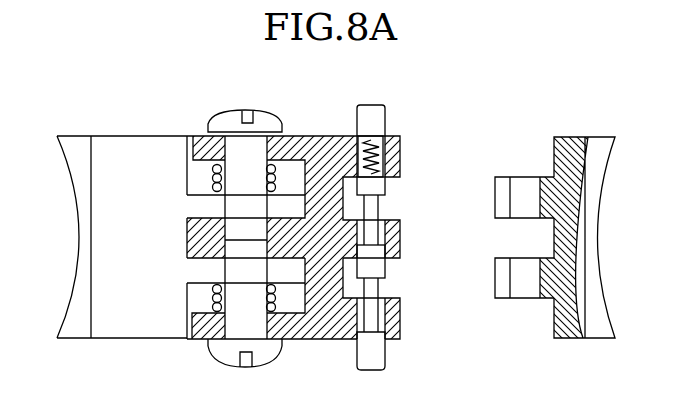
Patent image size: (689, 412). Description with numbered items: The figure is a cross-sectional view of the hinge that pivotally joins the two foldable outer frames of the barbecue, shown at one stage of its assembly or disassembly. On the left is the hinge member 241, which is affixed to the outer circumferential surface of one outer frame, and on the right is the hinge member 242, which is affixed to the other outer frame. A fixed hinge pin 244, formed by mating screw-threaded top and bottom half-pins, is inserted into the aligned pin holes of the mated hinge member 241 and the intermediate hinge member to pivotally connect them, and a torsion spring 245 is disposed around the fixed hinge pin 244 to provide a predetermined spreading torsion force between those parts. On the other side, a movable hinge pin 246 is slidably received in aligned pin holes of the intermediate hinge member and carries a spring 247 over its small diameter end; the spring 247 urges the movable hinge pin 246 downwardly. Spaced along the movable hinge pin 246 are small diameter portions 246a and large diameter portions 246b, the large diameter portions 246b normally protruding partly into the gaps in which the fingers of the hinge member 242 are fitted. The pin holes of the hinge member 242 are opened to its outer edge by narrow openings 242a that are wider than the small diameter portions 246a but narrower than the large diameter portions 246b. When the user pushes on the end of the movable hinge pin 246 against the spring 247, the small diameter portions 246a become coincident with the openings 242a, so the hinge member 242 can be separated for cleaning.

The hinge member 241 is at (118, 145).
The hinge member 242 is at (552, 211).
The narrow opening 242a is at (504, 193).
The fixed hinge pin 244 is at (257, 118).
The torsion spring 245 is at (212, 178).
The movable hinge pin 246 is at (418, 216).
The small diameter portions 246a is at (377, 210).
The large diameter portions 246b is at (381, 268).
The spring 247 is at (402, 140).